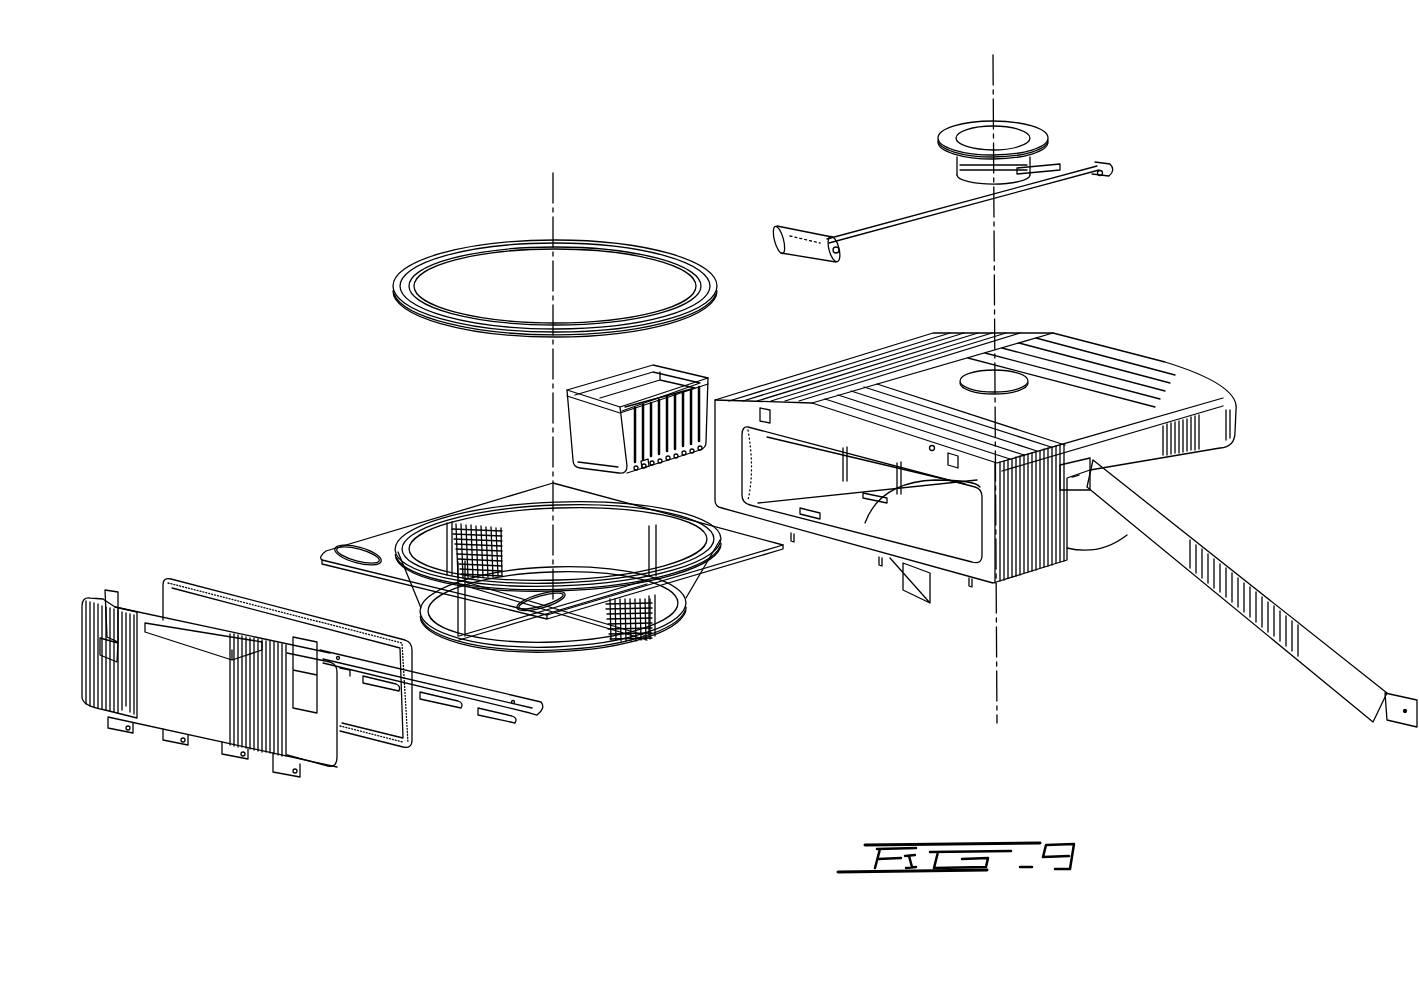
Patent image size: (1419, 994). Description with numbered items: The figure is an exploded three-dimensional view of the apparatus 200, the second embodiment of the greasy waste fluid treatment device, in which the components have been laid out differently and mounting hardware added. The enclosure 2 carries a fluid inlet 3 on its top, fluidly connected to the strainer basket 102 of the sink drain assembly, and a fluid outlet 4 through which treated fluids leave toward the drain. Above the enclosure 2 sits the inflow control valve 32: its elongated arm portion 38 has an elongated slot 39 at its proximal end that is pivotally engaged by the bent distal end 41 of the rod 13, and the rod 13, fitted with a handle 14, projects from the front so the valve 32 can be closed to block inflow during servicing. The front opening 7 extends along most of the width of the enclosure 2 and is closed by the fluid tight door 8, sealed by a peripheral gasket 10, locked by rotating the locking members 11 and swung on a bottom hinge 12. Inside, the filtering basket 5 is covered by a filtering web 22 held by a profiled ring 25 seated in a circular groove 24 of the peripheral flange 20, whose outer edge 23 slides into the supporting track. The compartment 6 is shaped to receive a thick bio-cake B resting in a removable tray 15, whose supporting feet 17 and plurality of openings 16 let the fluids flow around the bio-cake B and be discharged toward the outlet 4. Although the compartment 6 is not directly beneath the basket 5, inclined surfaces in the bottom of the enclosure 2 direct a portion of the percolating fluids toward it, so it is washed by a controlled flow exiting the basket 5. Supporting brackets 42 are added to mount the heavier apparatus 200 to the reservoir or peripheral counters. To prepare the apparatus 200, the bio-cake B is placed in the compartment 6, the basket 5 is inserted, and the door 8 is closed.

The apparatus 200 is at (690, 168).
The enclosure 2 is at (1112, 358).
The fluid inlet 3 is at (1013, 378).
The fluid outlet 4 is at (960, 520).
The filtering basket 5 is at (745, 568).
The compartment 6 is at (823, 500).
The front opening 7 is at (713, 477).
The door 8 is at (338, 770).
The peripheral gasket 10 is at (415, 740).
The locking members 11 is at (108, 590).
The bottom hinge 12 is at (535, 716).
The rod 13 is at (968, 200).
The handle 14 is at (842, 253).
The removable tray 15 is at (560, 420).
The openings 16 is at (647, 472).
The supporting feet 17 is at (593, 467).
The peripheral flange 20 is at (373, 553).
The filtering web 22 is at (507, 543).
The outer edge 23 is at (613, 637).
The circular groove 24 is at (538, 500).
The profiled ring 25 is at (395, 290).
The inflow control valve 32 is at (1105, 128).
The elongated arm portion 38 is at (1057, 167).
The elongated slot 39 is at (1112, 170).
The bent distal end 41 is at (1102, 182).
The supporting brackets 42 is at (1250, 597).
The strainer basket 102 is at (968, 118).
The bio-cake B is at (647, 390).